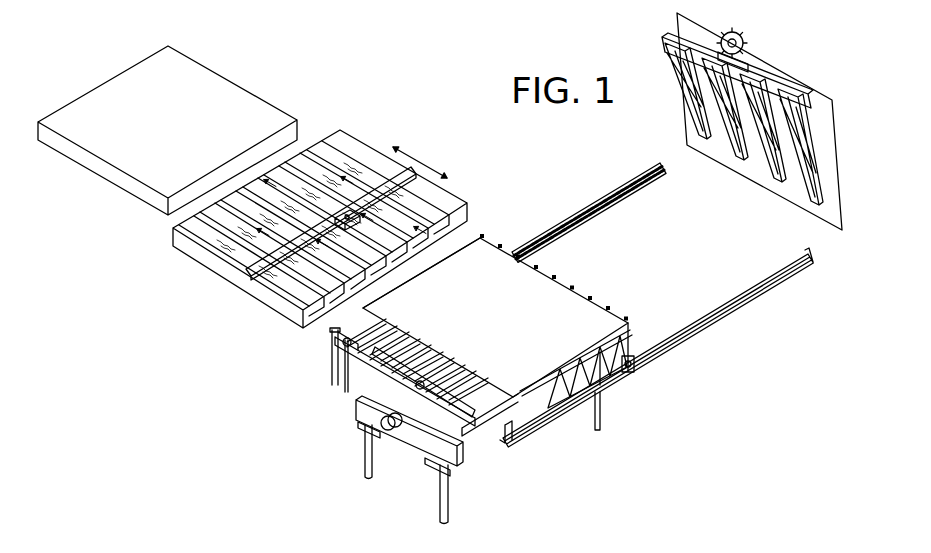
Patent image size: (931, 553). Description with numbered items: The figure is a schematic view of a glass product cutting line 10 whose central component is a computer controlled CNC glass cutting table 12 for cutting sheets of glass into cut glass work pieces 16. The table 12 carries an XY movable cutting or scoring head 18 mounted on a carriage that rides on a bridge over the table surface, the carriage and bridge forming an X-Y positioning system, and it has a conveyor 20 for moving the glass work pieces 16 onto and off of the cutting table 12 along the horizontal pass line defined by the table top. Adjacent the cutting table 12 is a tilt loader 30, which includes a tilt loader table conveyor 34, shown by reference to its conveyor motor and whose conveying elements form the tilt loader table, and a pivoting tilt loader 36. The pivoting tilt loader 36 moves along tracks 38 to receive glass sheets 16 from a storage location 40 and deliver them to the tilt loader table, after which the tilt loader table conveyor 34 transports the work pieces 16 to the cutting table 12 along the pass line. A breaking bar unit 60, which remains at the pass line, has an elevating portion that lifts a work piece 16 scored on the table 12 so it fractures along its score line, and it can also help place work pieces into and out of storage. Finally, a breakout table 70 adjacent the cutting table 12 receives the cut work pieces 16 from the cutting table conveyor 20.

The glass product cutting line 10 is at (553, 178).
The CNC glass cutting table 12 is at (225, 302).
The glass work pieces 16 is at (518, 316).
The cutting or scoring head 18 is at (345, 222).
The conveyor 20 is at (460, 234).
The tilt loader 30 is at (396, 421).
The tilt loader table conveyor 34 is at (395, 385).
The pivoting tilt loader 36 is at (638, 340).
The tracks 38 is at (722, 326).
The storage location 40 is at (818, 148).
The breaking bar unit 60 is at (330, 333).
The breakout table 70 is at (122, 134).